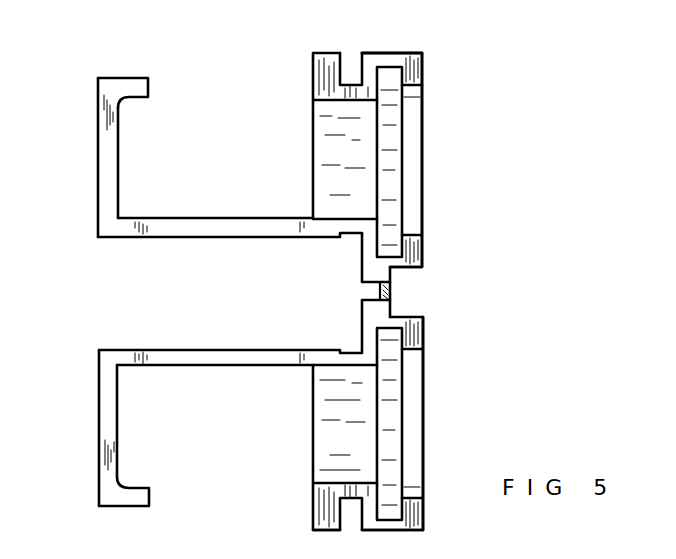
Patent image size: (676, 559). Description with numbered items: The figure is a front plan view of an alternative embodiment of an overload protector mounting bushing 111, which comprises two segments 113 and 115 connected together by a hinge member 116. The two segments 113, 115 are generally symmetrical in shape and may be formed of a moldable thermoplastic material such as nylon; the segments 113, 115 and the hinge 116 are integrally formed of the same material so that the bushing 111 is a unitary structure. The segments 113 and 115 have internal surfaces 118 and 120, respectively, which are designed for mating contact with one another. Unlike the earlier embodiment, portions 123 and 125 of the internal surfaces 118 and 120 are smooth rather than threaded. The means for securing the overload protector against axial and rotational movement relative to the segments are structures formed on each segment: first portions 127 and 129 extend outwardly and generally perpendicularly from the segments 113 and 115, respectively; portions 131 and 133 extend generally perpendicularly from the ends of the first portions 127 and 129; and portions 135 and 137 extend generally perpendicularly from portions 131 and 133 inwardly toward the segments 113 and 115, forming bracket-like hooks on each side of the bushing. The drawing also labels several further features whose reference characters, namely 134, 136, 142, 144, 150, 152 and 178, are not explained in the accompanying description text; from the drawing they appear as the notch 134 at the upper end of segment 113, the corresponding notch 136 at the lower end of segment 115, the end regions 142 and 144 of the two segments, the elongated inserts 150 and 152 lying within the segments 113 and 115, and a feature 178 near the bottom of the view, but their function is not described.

The mounting bushing 111 is at (440, 74).
The segment 113 is at (431, 169).
The segment 115 is at (425, 452).
The hinge member 116 is at (383, 290).
The internal surface 118 is at (325, 77).
The internal surface 120 is at (327, 510).
The portion of internal surface 123 is at (336, 148).
The portion of internal surface 125 is at (331, 430).
The first portion 127 is at (236, 231).
The first portion 129 is at (243, 353).
The portion 131 is at (100, 160).
The portion 133 is at (108, 431).
The upper notch 134 is at (352, 82).
The portion 135 is at (139, 86).
The lower notch 136 is at (352, 499).
The portion 137 is at (136, 495).
The upper end wall 142 is at (396, 53).
The lower end wall 144 is at (423, 533).
The upper pin 150 is at (391, 120).
The lower pin 152 is at (394, 412).
The bottom surface 178 is at (293, 558).